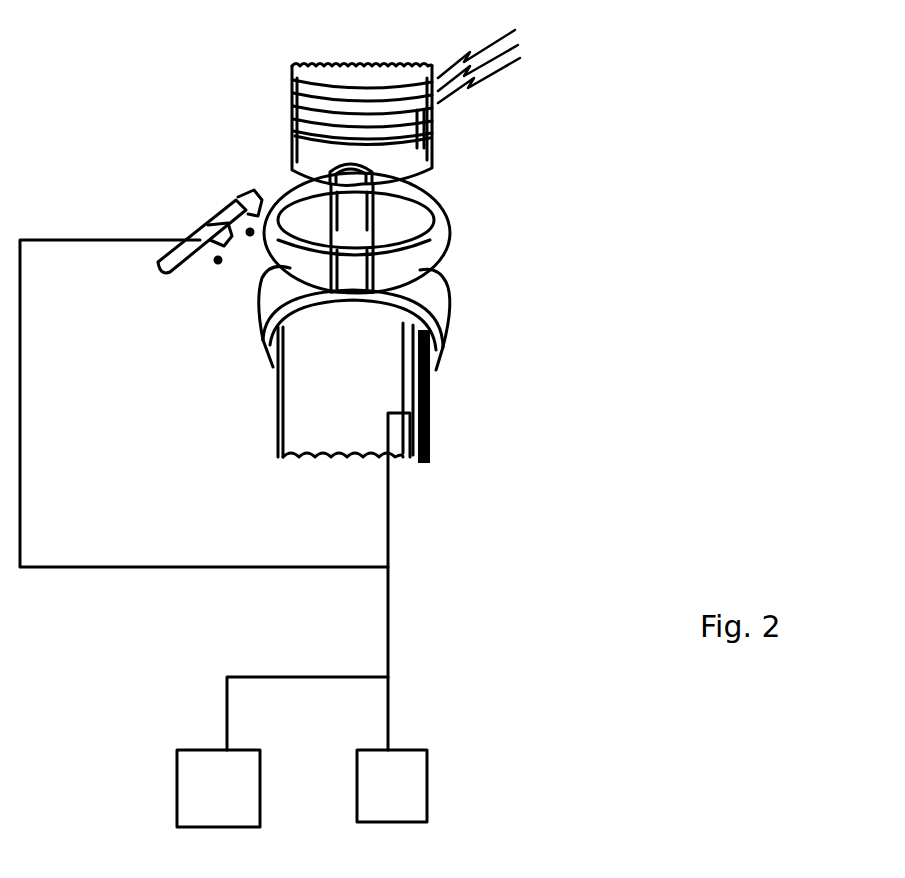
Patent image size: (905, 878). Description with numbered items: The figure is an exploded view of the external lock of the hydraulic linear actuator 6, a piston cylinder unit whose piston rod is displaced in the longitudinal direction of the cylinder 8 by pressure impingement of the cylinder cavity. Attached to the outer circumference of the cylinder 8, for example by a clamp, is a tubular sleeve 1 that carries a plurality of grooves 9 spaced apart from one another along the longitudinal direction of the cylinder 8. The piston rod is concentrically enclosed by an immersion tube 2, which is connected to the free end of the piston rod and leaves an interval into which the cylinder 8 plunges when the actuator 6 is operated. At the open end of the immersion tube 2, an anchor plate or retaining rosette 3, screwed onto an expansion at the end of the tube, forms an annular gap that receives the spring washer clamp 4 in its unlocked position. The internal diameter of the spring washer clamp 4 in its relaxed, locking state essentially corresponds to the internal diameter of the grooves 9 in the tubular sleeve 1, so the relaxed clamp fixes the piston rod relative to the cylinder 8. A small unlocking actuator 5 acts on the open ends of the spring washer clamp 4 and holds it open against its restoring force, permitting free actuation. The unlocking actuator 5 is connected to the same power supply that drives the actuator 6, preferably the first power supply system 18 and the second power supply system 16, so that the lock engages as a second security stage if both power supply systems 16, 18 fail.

The tubular sleeve 1 is at (287, 117).
The immersion tube 2 is at (277, 410).
The retaining rosette 3 is at (263, 245).
The spring washer clamp 4 is at (250, 307).
The unlocking actuator 5 is at (163, 264).
The linear actuator 6 is at (718, 262).
The cylinder 8 is at (433, 144).
The grooves 9 is at (534, 66).
The second power supply system 16 is at (230, 792).
The first power supply system 18 is at (398, 768).